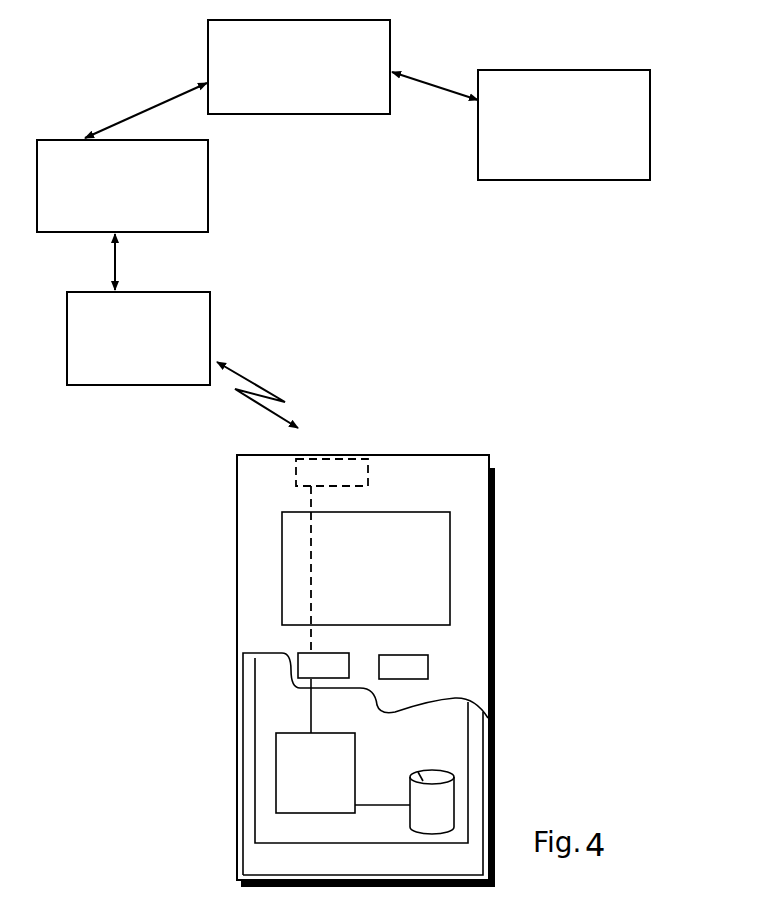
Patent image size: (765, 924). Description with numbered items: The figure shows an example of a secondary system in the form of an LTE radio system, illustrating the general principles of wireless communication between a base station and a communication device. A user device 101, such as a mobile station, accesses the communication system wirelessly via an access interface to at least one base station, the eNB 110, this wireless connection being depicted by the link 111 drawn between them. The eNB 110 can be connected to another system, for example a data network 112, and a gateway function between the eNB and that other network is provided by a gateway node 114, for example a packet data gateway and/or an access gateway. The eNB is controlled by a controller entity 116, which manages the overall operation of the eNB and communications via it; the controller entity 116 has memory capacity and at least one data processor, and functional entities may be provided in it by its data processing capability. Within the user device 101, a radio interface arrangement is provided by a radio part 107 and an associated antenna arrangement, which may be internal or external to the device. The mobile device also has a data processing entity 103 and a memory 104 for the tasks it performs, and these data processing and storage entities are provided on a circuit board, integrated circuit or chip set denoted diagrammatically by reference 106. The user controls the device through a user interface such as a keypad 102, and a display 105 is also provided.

The user device 101 is at (237, 490).
The keypad 102 is at (303, 668).
The data processing entity 103 is at (283, 759).
The memory 104 is at (425, 810).
The display 105 is at (298, 557).
The circuit board 106 is at (277, 830).
The radio part 107 is at (317, 472).
The base station (eNB) 110 is at (138, 338).
The wireless link 111 is at (268, 358).
The data network 112 is at (564, 125).
The gateway node 114 is at (299, 67).
The controller entity 116 is at (122, 186).